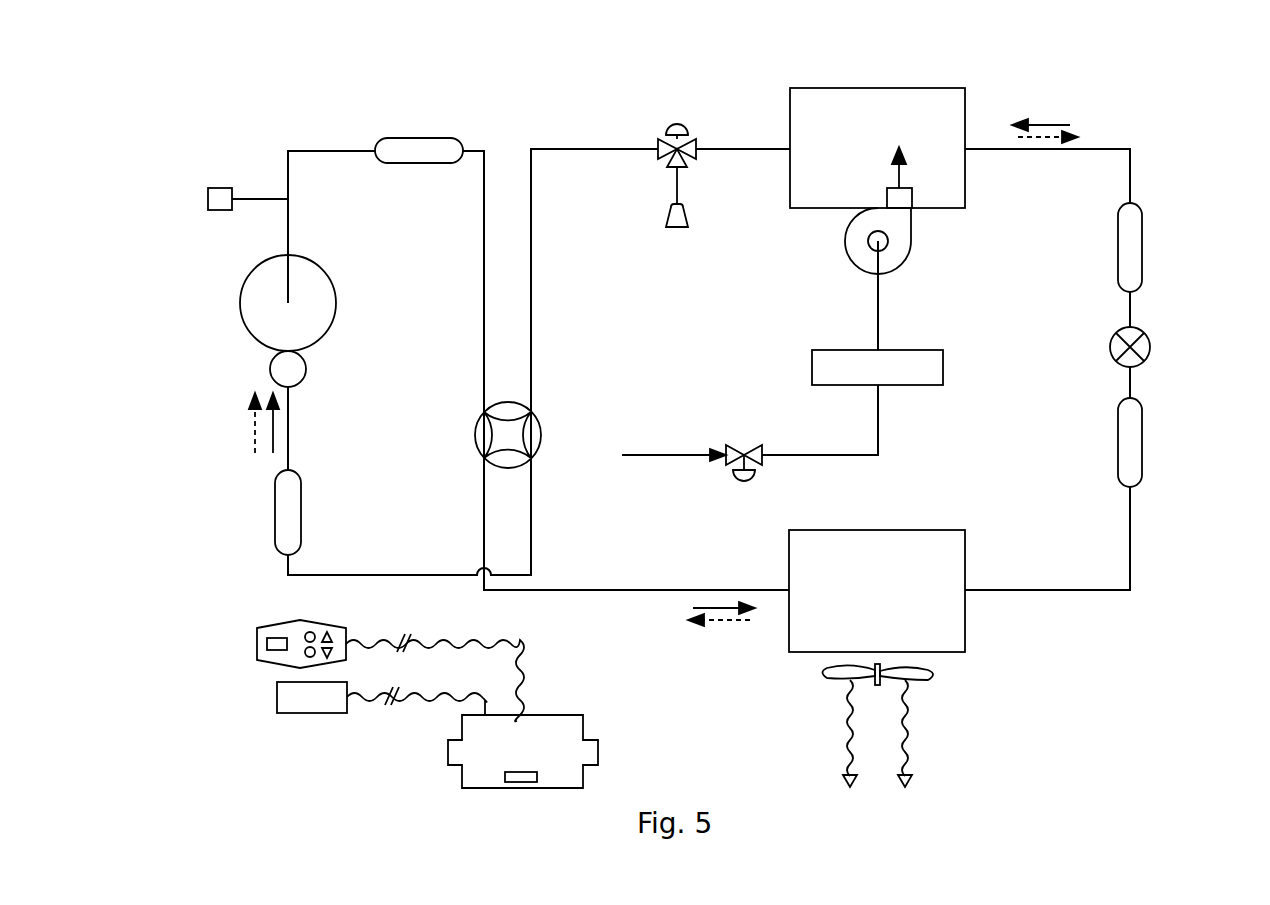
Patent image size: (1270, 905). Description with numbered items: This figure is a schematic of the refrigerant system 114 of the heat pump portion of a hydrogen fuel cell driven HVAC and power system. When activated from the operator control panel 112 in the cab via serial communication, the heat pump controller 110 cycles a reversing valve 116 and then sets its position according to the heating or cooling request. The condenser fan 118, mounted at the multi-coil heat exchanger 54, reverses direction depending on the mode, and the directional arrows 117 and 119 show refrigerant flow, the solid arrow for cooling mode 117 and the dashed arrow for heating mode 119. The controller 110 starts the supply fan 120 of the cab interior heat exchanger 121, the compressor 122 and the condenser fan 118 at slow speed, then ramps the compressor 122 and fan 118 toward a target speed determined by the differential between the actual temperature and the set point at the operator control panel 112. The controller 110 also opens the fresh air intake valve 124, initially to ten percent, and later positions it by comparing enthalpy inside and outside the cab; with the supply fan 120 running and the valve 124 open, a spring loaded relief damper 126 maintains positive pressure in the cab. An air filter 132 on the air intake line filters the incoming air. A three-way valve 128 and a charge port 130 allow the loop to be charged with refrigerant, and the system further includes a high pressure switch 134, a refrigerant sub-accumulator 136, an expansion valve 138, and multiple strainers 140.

The multi-coil heat exchanger 54 is at (878, 530).
The heat pump controller 110 is at (557, 714).
The operator control panel 112 is at (257, 641).
The refrigerant system 114 is at (232, 126).
The reversing valve 116 is at (533, 414).
The directional arrow for cooling mode 117 is at (722, 602).
The condenser fan 118 is at (933, 675).
The directional arrow for heating mode 119 is at (722, 622).
The supply fan 120 is at (902, 262).
The cab interior heat exchanger 121 is at (877, 88).
The compressor 122 is at (254, 337).
The fresh air intake valve 124 is at (740, 484).
The spring loaded relief damper 126 is at (310, 713).
The three-way valve 128 is at (678, 122).
The charge port 130 is at (676, 228).
The air filter 132 is at (812, 367).
The high pressure switch 134 is at (218, 212).
The refrigerant sub-accumulator 136 is at (275, 512).
The expansion valve 138 is at (1149, 350).
The strainers 140 is at (1142, 246).